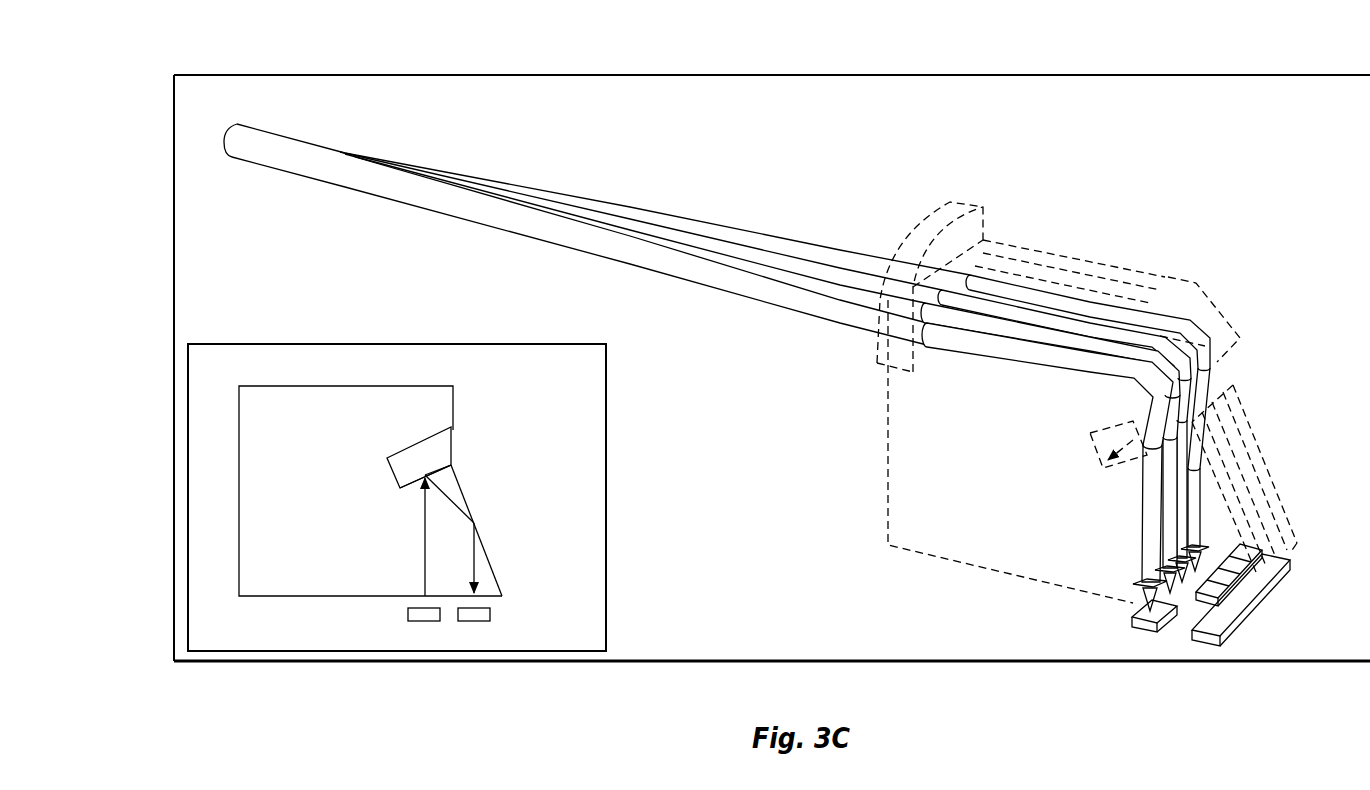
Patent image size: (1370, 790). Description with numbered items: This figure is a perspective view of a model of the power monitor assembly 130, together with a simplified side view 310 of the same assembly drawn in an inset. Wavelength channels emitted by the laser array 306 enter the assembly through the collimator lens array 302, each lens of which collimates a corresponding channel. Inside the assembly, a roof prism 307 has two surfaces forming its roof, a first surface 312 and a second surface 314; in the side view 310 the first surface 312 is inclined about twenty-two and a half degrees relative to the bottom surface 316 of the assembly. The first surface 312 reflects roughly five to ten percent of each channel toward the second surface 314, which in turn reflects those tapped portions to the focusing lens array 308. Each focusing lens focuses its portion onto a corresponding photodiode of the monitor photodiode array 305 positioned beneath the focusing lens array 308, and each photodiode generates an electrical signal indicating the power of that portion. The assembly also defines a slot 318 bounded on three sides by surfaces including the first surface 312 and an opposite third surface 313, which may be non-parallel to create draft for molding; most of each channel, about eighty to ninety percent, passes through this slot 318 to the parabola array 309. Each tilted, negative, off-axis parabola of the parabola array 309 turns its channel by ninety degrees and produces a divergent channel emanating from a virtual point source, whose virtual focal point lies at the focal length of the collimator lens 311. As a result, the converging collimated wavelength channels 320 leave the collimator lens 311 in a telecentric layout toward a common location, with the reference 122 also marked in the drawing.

The power monitor assembly 130 is at (1230, 56).
The converging collimated wavelength channels 320 is at (743, 230).
The collimator lens 311 is at (878, 338).
The reference axis 122 is at (1001, 451).
The parabola array 309 is at (1185, 347).
The roof prism 307 is at (1217, 488).
The collimator lens array 302 is at (1128, 608).
The laser array 306 is at (1140, 627).
The focusing lens array 308 is at (1190, 615).
The monitor photodiode array 305 is at (1203, 640).
The side view 310 is at (537, 371).
The bottom surface 316 is at (280, 596).
The third surface 313 is at (449, 441).
The slot 318 is at (443, 447).
The first surface 312 is at (443, 457).
The second surface 314 is at (463, 487).